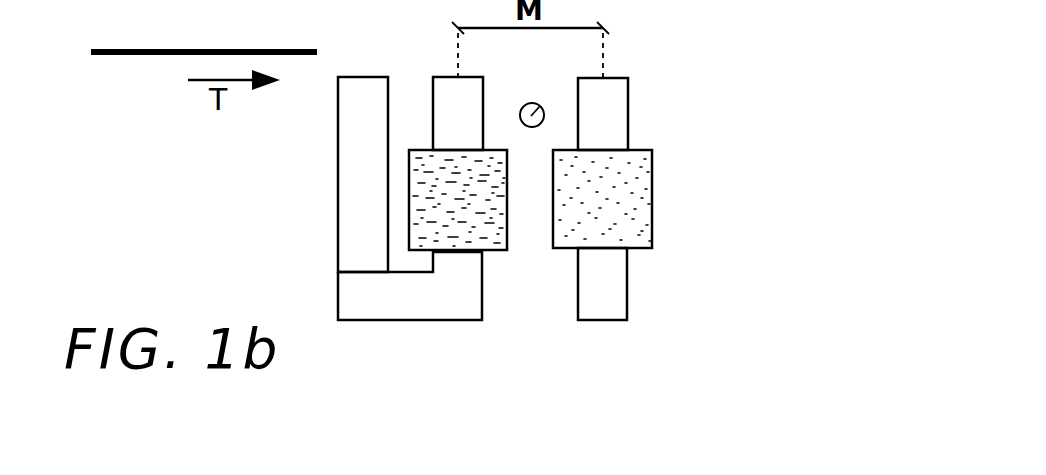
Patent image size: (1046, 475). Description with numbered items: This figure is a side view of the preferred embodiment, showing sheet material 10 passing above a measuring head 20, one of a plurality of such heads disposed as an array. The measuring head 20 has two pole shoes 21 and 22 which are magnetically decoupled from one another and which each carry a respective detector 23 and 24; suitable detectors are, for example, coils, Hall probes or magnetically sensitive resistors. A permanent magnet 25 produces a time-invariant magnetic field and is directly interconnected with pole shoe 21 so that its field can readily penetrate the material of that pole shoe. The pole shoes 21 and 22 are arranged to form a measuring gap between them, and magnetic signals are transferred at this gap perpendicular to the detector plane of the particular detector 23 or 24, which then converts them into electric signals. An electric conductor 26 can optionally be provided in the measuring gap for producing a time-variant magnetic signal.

The sheet material 10 is at (140, 57).
The measuring head 20 is at (316, 160).
The pole shoe 21 is at (410, 298).
The pole shoe 22 is at (607, 300).
The detector 23 is at (485, 227).
The detector 24 is at (627, 195).
The permanent magnet 25 is at (360, 193).
The electric conductor 26 is at (543, 107).